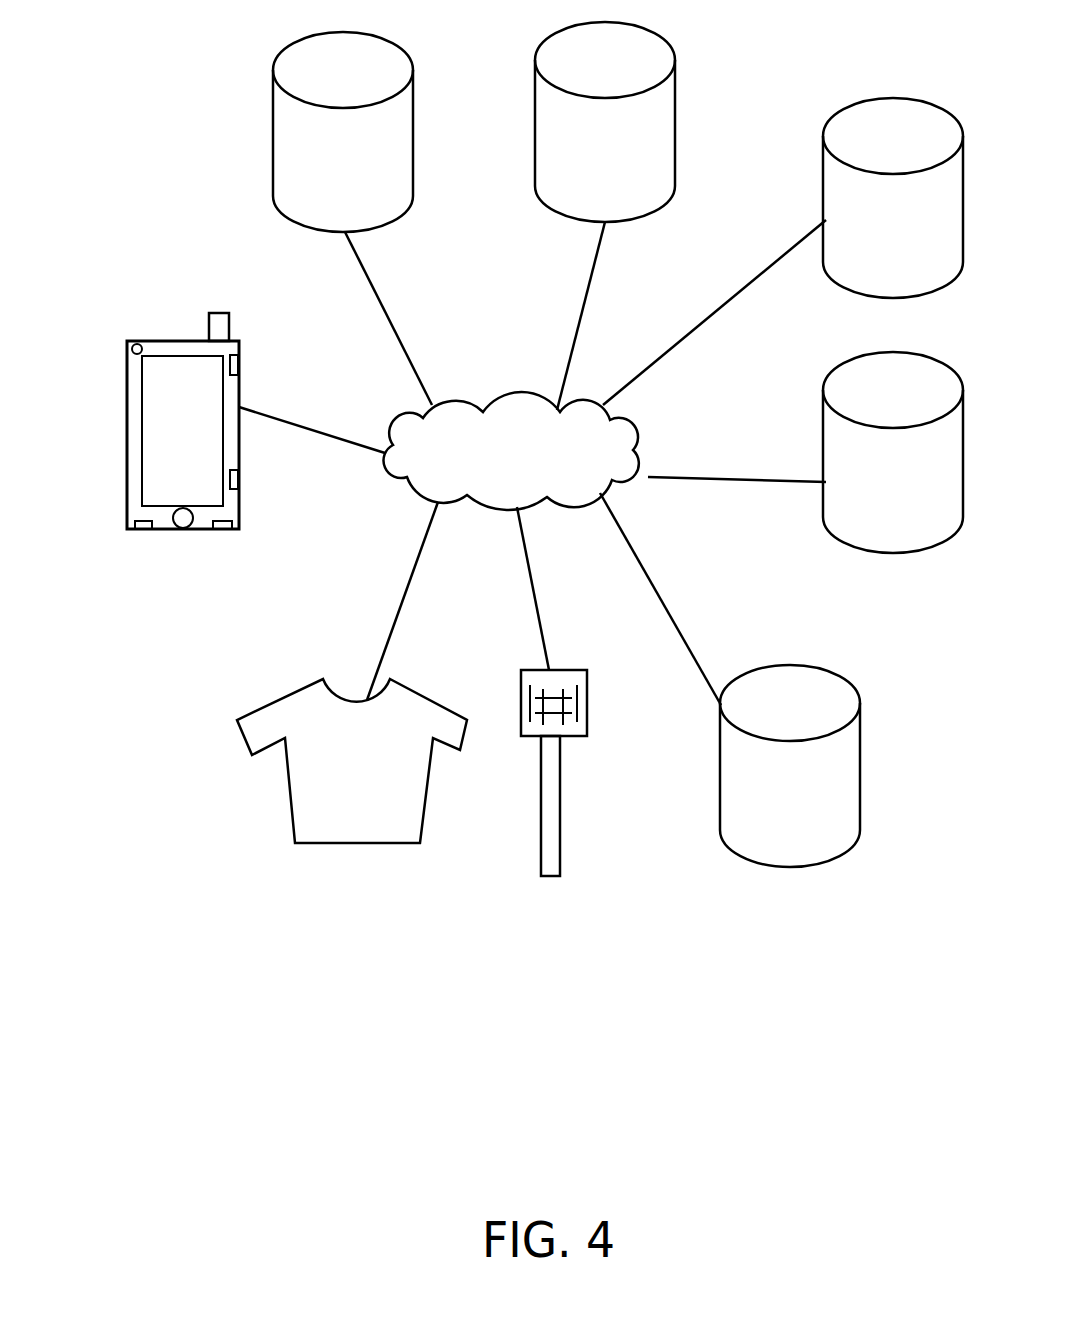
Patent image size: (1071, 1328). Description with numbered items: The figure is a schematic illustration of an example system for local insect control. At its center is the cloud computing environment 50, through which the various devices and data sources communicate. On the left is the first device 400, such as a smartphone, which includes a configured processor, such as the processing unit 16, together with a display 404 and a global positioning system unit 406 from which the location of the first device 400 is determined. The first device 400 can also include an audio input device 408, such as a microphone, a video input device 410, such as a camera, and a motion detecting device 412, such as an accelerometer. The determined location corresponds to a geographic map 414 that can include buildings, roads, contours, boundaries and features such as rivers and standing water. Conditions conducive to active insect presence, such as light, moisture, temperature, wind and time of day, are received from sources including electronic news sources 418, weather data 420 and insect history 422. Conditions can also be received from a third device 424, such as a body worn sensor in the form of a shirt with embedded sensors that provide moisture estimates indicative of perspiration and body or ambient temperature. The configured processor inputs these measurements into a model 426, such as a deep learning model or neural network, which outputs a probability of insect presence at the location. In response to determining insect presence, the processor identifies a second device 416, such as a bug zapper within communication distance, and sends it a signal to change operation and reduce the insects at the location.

The processing unit 16 is at (142, 528).
The cloud computing environment 50 is at (412, 417).
The first device 400 is at (176, 341).
The display 404 is at (160, 448).
The global positioning system (GPS) unit 406 is at (240, 473).
The audio input device 408 is at (225, 528).
The video input device 410 is at (132, 344).
The motion detecting device 412 is at (240, 360).
The geographic map 414 is at (877, 98).
The second device 416 is at (575, 670).
The electronic news sources 418 is at (588, 22).
The weather data 420 is at (850, 368).
The insect history 422 is at (328, 31).
The third device 424 is at (405, 683).
The model 426 is at (772, 665).